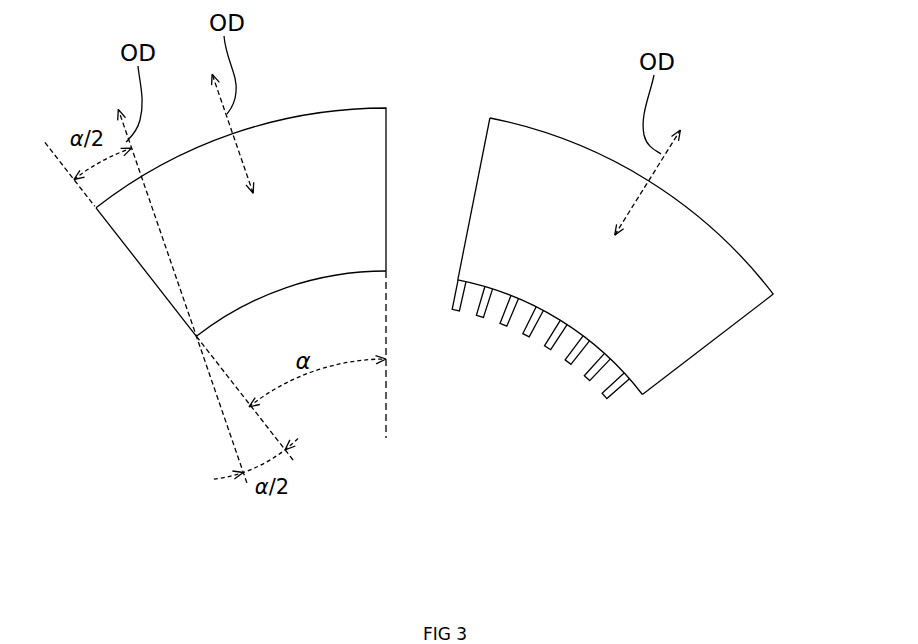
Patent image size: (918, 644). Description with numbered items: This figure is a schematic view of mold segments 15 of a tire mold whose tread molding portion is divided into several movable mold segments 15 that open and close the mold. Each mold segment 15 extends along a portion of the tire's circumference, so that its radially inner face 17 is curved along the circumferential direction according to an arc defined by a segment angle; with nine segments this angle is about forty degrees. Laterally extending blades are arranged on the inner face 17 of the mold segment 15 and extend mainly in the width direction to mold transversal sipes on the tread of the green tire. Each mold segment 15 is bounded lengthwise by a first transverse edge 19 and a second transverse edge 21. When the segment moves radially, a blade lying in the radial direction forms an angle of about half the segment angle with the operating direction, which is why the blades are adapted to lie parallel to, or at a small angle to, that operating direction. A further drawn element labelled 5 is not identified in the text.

The mold segment 15 is at (312, 145).
The inner face 17 is at (263, 296).
The first transverse edge 19 is at (477, 170).
The stator segment with teeth 5 is at (695, 255).
The second transverse edge 21 is at (713, 348).